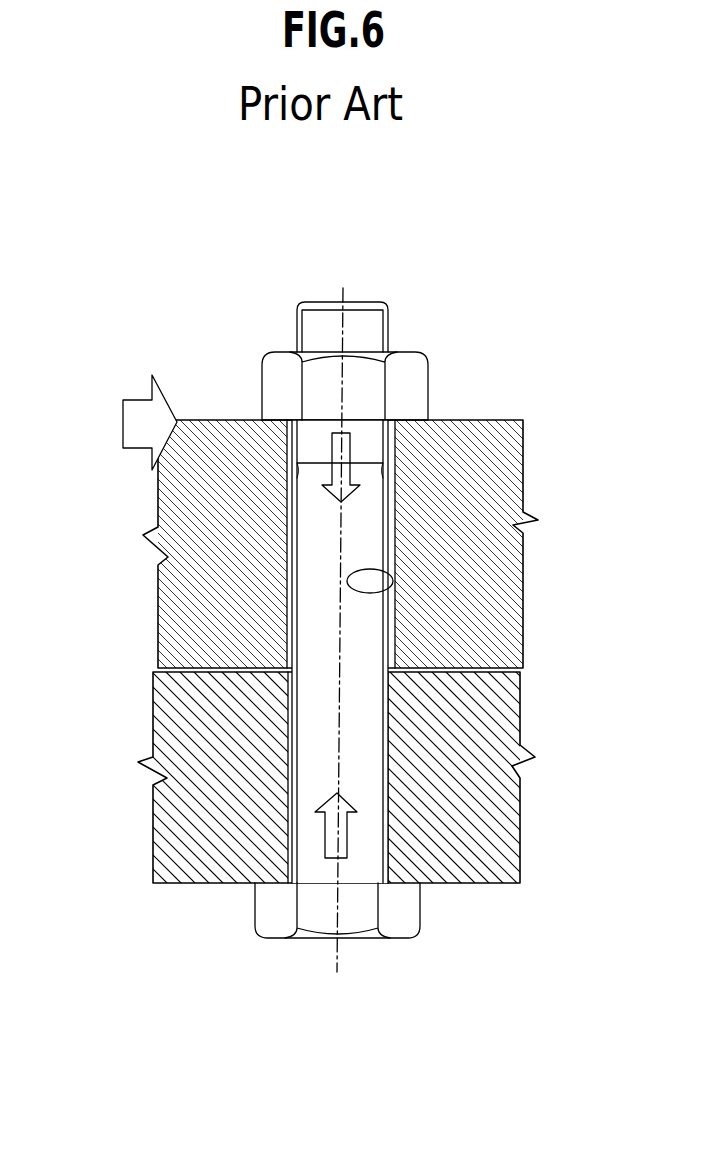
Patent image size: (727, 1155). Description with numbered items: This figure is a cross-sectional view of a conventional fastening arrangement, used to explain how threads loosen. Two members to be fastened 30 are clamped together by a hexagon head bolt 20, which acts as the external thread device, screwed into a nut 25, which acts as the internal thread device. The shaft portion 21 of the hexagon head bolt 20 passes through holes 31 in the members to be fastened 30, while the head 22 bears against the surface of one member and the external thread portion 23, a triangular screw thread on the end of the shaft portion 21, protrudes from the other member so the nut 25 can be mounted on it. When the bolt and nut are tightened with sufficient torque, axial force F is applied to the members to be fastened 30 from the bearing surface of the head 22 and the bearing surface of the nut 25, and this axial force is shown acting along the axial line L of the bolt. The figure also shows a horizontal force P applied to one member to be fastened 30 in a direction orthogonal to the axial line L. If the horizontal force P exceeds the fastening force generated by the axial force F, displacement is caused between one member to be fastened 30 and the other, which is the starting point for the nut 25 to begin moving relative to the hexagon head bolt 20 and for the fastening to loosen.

The hexagon head bolt 20 is at (426, 646).
The shaft portion 21 is at (365, 766).
The head 22 is at (318, 925).
The external thread portion 23 is at (372, 335).
The nut 25 is at (277, 395).
The members to be fastened 30 is at (527, 617).
The holes 31 is at (393, 582).
The axial line L is at (347, 293).
The horizontal force P is at (123, 422).
The axial force F is at (345, 503).